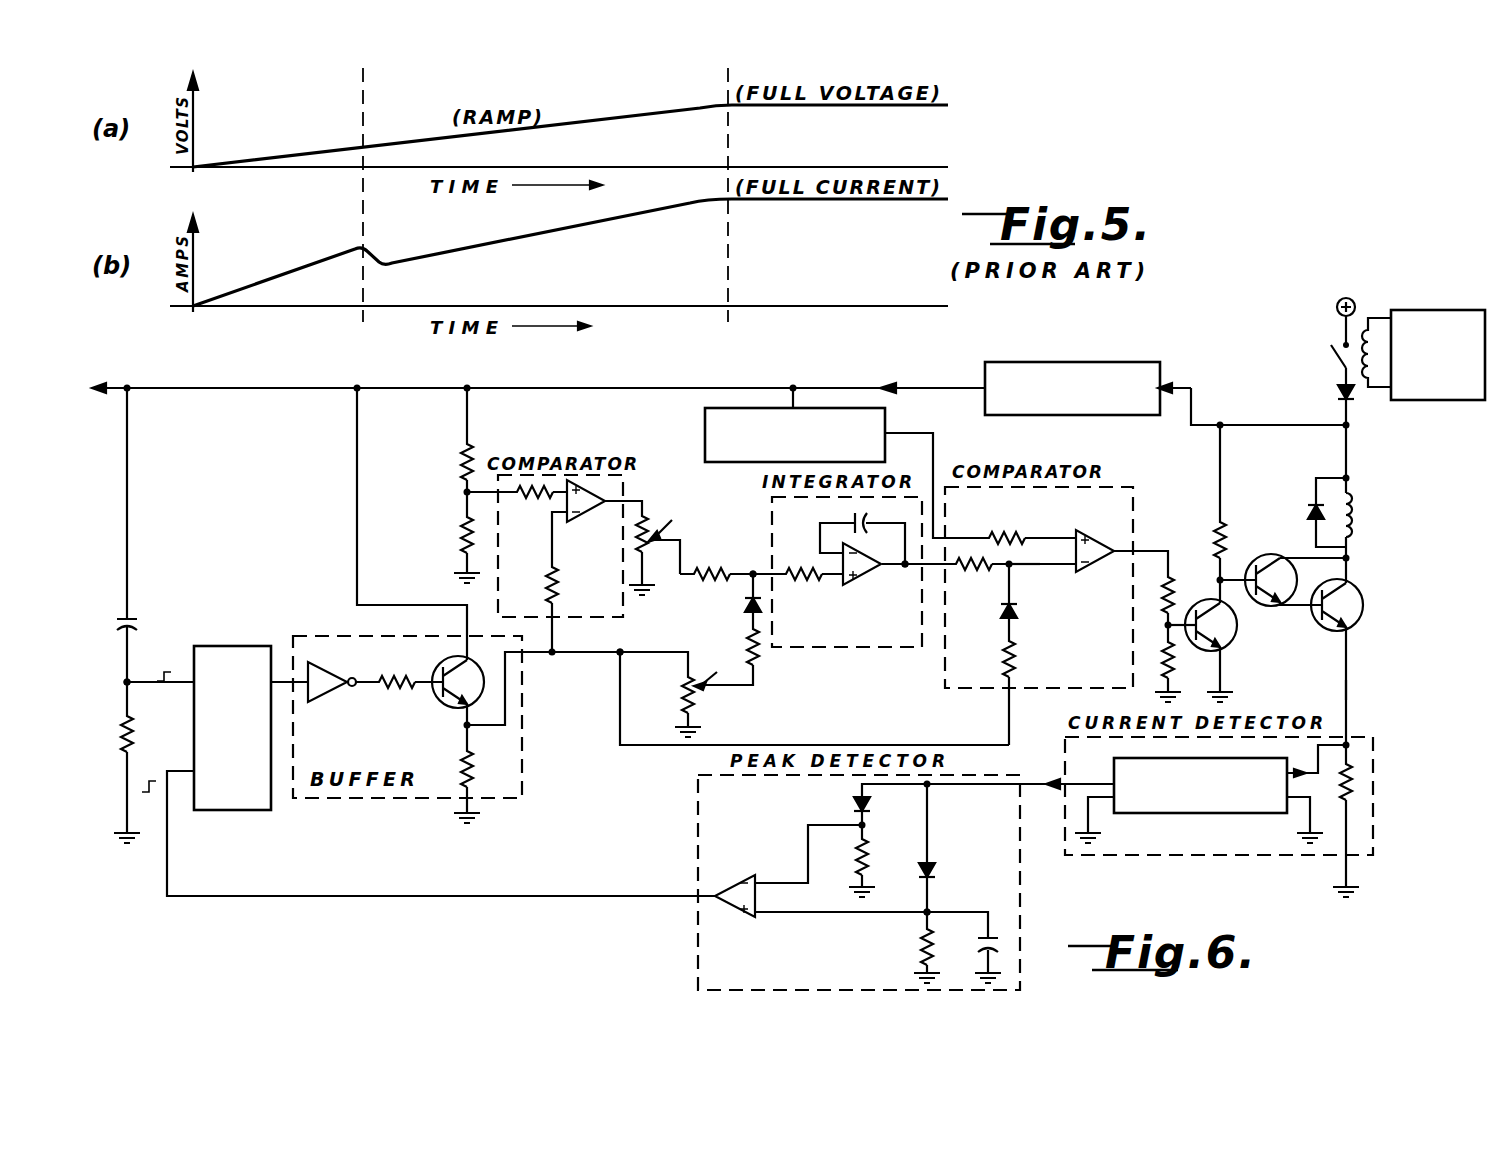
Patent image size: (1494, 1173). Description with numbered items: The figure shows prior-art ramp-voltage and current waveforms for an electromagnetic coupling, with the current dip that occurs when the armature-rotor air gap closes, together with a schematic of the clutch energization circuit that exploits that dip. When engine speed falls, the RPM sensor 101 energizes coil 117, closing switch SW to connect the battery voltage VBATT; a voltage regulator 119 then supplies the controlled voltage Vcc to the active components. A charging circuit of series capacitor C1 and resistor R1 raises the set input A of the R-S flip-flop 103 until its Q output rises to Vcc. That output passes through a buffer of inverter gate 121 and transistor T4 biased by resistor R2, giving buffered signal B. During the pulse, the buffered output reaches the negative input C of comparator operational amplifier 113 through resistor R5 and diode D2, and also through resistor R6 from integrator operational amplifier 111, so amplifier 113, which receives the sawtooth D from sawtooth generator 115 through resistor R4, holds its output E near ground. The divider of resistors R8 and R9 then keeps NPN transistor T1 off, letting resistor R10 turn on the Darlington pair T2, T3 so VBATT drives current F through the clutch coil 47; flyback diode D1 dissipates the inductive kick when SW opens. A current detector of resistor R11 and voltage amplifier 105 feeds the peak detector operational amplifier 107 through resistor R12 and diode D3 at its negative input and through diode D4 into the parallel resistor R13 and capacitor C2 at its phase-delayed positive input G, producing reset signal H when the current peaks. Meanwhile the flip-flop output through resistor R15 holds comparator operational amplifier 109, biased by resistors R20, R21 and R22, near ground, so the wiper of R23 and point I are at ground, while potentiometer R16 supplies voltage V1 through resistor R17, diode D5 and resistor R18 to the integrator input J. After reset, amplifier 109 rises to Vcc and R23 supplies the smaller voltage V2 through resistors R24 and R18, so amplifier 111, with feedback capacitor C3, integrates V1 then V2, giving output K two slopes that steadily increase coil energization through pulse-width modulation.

The RPM sensor 101 is at (1452, 400).
The R-S flip-flop 103 is at (222, 810).
The voltage amplifier 105 is at (1218, 813).
The operational amplifier 107 is at (735, 906).
The operational amplifier 109 is at (592, 520).
The operational amplifier 111 is at (860, 586).
The operational amplifier 113 is at (1102, 560).
The sawtooth generator 115 is at (748, 406).
The coil 117 is at (1369, 389).
The voltage regulator 119 is at (1022, 338).
The inverter gate 121 is at (347, 670).
The clutch coil 47 is at (1372, 549).
The capacitor C1 is at (141, 612).
The capacitor C2 is at (971, 951).
The capacitor C3 is at (876, 513).
The resistor R1 is at (143, 732).
The resistor R2 is at (395, 694).
The resistor R4 is at (1005, 526).
The resistor R5 is at (1028, 657).
The resistor R6 is at (972, 577).
The resistor R8 is at (1184, 592).
The resistor R9 is at (1184, 658).
The resistor R10 is at (1242, 538).
The resistor R11 is at (1324, 780).
The resistor R12 is at (883, 855).
The resistor R13 is at (950, 940).
The resistor R15 is at (575, 583).
The resistor R16 is at (667, 693).
The resistor R17 is at (758, 632).
The resistor R18 is at (805, 586).
The resistor R20 is at (444, 460).
The resistor R21 is at (444, 533).
The resistor R22 is at (530, 503).
The resistor R23 is at (658, 555).
The resistor R24 is at (709, 586).
The flyback diode D1 is at (1310, 512).
The diode D2 is at (989, 615).
The diode D3 is at (844, 808).
The diode D4 is at (944, 873).
The diode D5 is at (733, 615).
The NPN transistor T1 is at (1224, 646).
The Darlington transistor T2 is at (1262, 600).
The Darlington transistor T3 is at (1362, 600).
The PNP transistor T4 is at (448, 664).
The switch SW is at (1319, 365).
The controlled supply voltage Vcc is at (537, 377).
The battery voltage VBATT is at (1348, 308).
The voltage V1 is at (715, 670).
The voltage V2 is at (668, 542).
The timing diagram point A is at (148, 682).
The timing diagram point B is at (572, 654).
The timing diagram point C is at (1035, 566).
The timing diagram point D is at (1058, 540).
The timing diagram point E is at (1147, 551).
The timing diagram point F is at (1348, 694).
The timing diagram point G is at (853, 912).
The timing diagram point H is at (543, 896).
The timing diagram point I is at (640, 503).
The timing diagram point J is at (753, 572).
The timing diagram point K is at (905, 567).